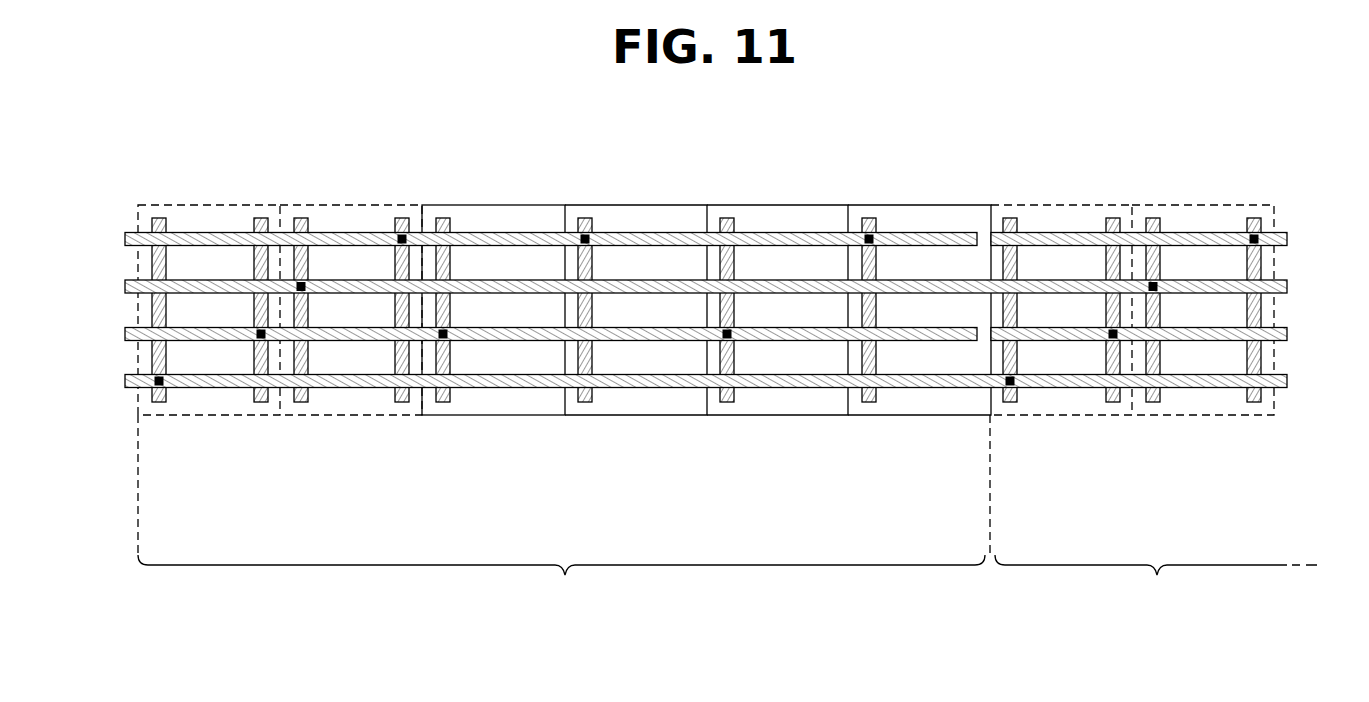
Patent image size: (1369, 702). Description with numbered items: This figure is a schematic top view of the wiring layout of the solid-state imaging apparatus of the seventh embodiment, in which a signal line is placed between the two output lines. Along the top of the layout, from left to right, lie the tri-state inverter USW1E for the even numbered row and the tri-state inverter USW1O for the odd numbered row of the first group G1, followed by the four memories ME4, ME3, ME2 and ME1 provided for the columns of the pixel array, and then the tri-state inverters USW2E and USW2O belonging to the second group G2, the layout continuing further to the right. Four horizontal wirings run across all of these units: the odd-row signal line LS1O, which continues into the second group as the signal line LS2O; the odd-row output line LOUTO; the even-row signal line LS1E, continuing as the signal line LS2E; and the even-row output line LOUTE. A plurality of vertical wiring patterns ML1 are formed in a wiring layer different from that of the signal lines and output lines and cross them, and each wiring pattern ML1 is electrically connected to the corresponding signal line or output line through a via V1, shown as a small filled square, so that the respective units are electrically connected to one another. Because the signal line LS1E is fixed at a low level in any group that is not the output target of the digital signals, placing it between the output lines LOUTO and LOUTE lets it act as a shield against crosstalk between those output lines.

The tri-state inverter USW1E is at (223, 205).
The tri-state inverter USW1O is at (350, 205).
The memory ME4 is at (490, 205).
The memory ME3 is at (637, 205).
The memory ME2 is at (778, 205).
The memory ME1 is at (920, 205).
The tri-state inverter USW2E is at (1057, 205).
The tri-state inverter USW2O is at (1187, 205).
The wiring pattern ML1 is at (159, 402).
The signal line LS1O is at (125, 239).
The signal line LS2O is at (1288, 240).
The output line LOUTO is at (125, 287).
The signal line LS1E is at (125, 334).
The signal line LS2E is at (1288, 335).
The output line LOUTE is at (125, 381).
The via V1 is at (163, 378).
The group G1 is at (564, 510).
The group G2 is at (1156, 580).